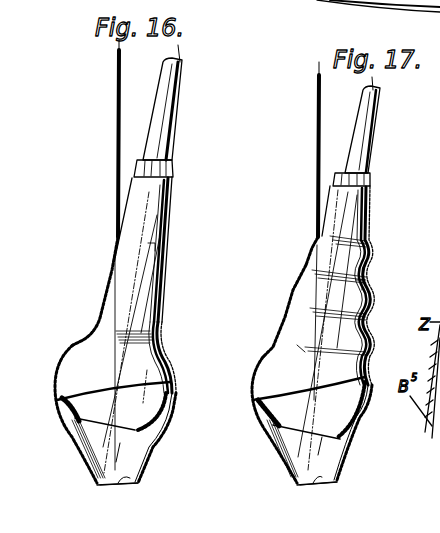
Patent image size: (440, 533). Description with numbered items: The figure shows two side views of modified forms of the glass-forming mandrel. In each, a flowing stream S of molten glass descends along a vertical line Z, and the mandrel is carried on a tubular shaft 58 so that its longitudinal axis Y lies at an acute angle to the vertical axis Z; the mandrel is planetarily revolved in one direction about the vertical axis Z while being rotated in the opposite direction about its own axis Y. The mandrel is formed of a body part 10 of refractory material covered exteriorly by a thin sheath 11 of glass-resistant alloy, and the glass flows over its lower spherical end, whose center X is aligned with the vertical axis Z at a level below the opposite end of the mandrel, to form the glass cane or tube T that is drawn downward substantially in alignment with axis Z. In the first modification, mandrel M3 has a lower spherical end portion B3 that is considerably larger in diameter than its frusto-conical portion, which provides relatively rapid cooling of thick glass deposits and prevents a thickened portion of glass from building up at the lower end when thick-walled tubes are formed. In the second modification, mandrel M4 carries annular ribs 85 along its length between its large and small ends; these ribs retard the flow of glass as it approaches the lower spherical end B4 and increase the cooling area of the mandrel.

In FIG. 16, the flowing stream S is at (117, 145).
In FIG. 17, the flowing stream S is at (317, 155).
In FIG. 16, the tubular shaft 58 is at (173, 124).
In FIG. 17, the tubular shaft 58 is at (377, 140).
In FIG. 16, the mandrel M3 is at (170, 213).
In FIG. 17, the mandrel M4 is at (367, 223).
In FIG. 16, the longitudinal axis Y is at (148, 247).
In FIG. 17, the longitudinal axis Y is at (370, 285).
In FIG. 16, the vertical axis Z is at (115, 309).
In FIG. 17, the vertical axis Z is at (303, 353).
In FIG. 16, the spherical end portion B3 is at (62, 417).
In FIG. 17, the spherical end B4 is at (263, 420).
In FIG. 16, the center X is at (115, 387).
In FIG. 17, the center X is at (313, 388).
In FIG. 16, the body part 10 is at (172, 402).
In FIG. 17, the body part 10 is at (368, 403).
In FIG. 16, the sheath 11 is at (127, 457).
In FIG. 17, the sheath 11 is at (329, 450).
In FIG. 16, the glass cane or tube T is at (143, 470).
In FIG. 17, the glass cane or tube T is at (337, 473).
In FIG. 17, the annular ribs 85 is at (272, 347).